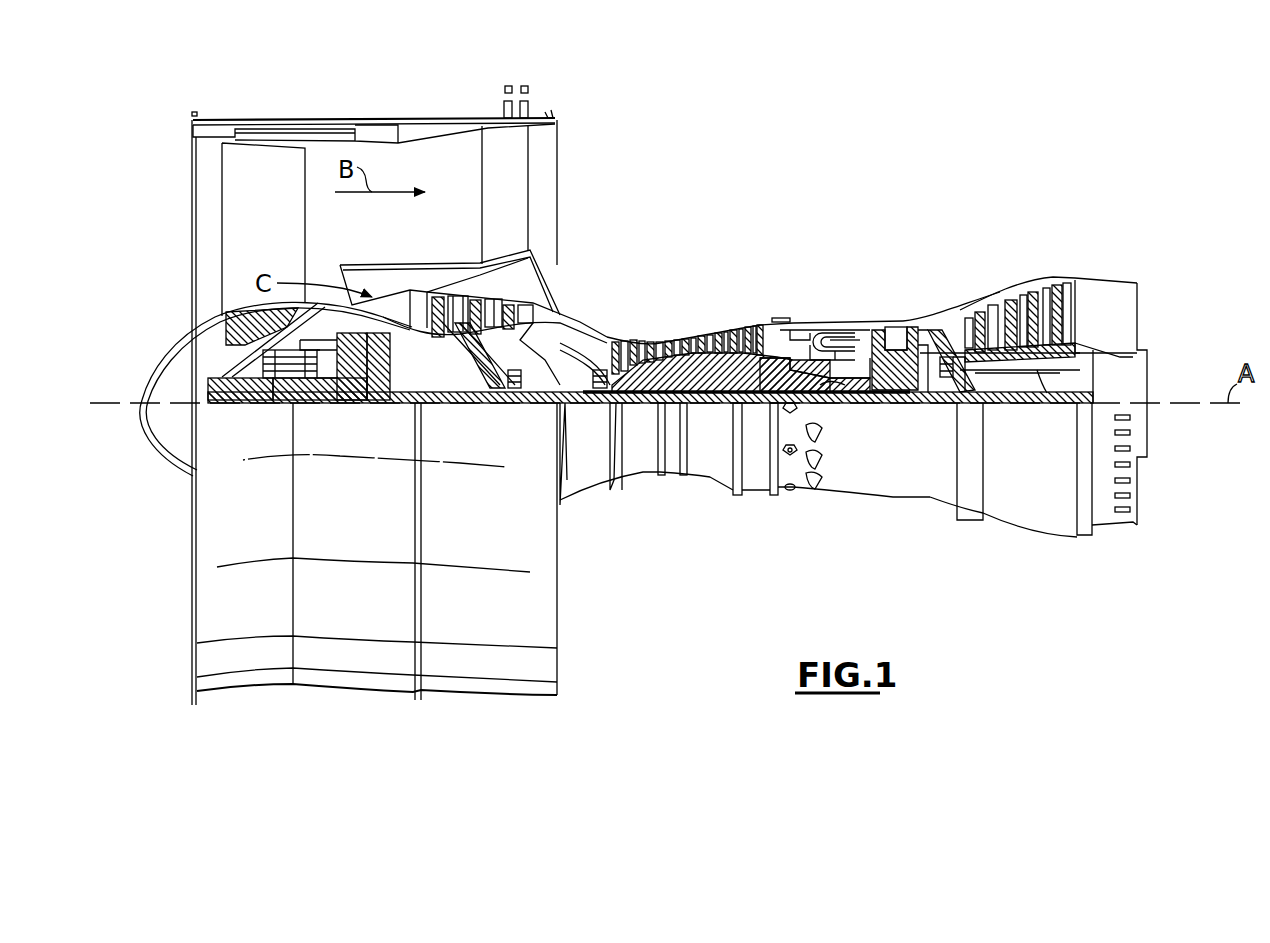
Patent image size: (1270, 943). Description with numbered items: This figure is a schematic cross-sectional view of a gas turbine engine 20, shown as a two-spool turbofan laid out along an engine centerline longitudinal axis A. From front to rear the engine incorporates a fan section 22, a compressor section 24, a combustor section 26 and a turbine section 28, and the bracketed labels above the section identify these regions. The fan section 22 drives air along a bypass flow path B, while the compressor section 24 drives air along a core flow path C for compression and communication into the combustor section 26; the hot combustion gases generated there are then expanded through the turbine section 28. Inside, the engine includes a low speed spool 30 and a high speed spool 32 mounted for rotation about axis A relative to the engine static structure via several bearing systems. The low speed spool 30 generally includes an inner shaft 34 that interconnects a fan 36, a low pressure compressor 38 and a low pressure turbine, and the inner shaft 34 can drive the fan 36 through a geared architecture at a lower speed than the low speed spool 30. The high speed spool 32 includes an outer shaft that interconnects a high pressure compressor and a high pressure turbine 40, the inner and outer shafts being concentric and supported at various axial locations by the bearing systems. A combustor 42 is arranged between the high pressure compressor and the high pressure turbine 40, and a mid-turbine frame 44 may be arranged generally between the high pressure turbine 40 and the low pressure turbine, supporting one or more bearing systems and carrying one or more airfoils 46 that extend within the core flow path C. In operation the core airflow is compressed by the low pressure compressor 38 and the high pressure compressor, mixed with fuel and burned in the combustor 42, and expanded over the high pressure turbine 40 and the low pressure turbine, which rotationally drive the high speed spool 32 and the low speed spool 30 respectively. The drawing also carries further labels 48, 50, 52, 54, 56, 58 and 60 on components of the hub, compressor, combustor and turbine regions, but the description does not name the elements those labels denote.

The gas turbine engine 20 is at (838, 168).
The fan section 22 is at (402, 93).
The compressor section 24 is at (412, 239).
The combustor section 26 is at (867, 239).
The turbine section 28 is at (1088, 239).
The low speed spool 30 is at (712, 420).
The high speed spool 32 is at (752, 355).
The inner shaft 34 is at (1040, 392).
The fan 36 is at (753, 500).
The low pressure compressor 38 is at (270, 400).
The high pressure turbine 40 is at (574, 403).
The combustor 42 is at (279, 246).
The mid-turbine frame 44 is at (492, 302).
The airfoils 46 is at (1022, 300).
The geared architecture 48 is at (380, 392).
The outer shaft 50 is at (832, 380).
The high pressure compressor 52 is at (688, 358).
The high pressure turbine 54 is at (897, 320).
The combustor 56 is at (830, 345).
The mid-turbine frame 58 is at (940, 312).
The airfoils/vanes 60 is at (967, 387).